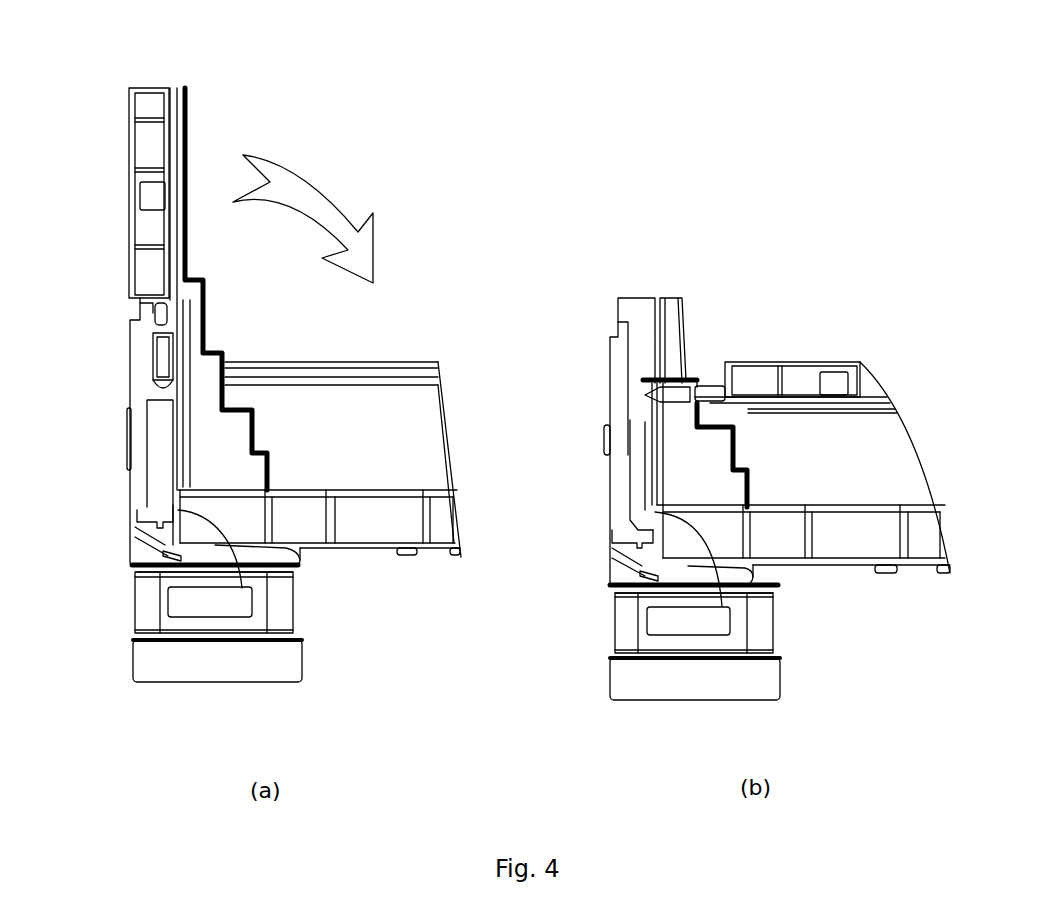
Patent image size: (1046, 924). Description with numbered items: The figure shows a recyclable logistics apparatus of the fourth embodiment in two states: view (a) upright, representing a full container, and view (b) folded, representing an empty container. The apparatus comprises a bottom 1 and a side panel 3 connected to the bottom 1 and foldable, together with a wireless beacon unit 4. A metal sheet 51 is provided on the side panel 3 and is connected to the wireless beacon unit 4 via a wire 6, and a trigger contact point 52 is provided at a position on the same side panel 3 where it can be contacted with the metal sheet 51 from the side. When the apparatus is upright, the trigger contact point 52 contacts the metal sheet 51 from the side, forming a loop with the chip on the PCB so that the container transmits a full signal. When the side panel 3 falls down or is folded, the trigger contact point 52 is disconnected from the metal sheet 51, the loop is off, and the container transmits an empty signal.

The bottom 1 is at (354, 448).
The side panel 3 is at (146, 108).
The wireless beacon unit 4 is at (183, 603).
The wire 6 is at (145, 500).
The metal sheet 51 is at (143, 357).
The trigger contact point 52 is at (153, 352).